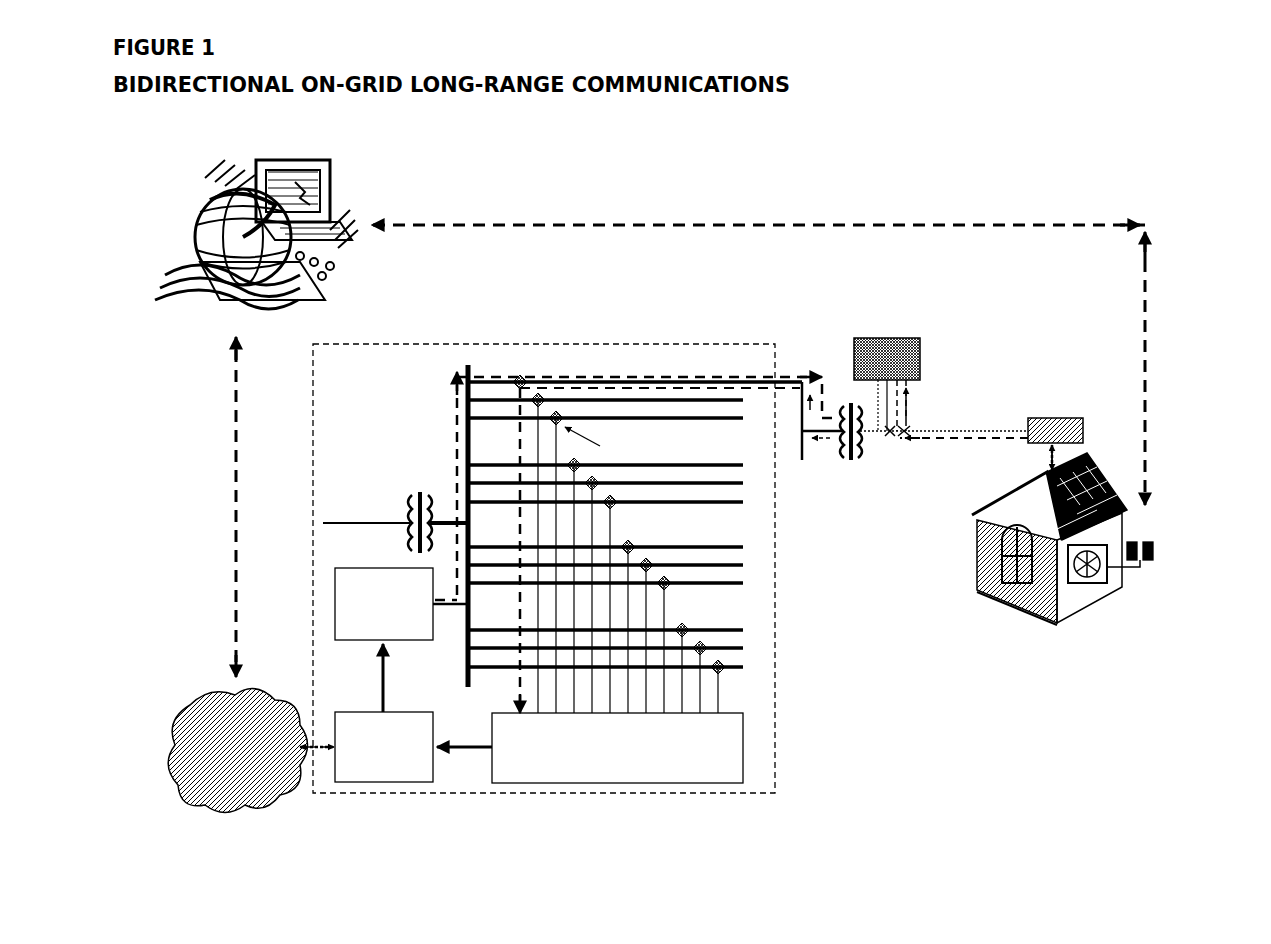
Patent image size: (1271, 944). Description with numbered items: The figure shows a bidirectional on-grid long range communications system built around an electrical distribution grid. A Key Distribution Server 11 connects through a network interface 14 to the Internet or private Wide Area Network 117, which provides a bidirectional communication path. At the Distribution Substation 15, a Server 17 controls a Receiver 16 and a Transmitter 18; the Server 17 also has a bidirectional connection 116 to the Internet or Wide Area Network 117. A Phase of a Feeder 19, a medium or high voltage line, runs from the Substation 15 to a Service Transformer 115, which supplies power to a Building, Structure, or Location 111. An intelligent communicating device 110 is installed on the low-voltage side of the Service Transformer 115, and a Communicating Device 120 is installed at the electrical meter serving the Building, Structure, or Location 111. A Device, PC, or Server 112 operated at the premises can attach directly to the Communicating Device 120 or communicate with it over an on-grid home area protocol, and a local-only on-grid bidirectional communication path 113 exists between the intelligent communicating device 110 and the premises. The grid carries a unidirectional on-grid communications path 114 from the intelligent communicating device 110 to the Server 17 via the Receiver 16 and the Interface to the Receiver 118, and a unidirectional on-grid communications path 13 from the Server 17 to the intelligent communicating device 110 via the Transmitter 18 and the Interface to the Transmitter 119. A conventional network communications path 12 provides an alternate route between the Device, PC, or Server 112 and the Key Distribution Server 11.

The Key Distribution Server (KDS) 11 is at (168, 222).
The conventional network communications path 12 is at (422, 222).
The unidirectional on-grid communications path 13 is at (455, 441).
The network interface 14 is at (231, 402).
The Distribution Substation 15 is at (775, 572).
The Receiver 16 is at (746, 750).
The Server 17 is at (335, 782).
The Transmitter 18 is at (335, 600).
The Phase of a Feeder 19 is at (640, 380).
The intelligent communicating device (ICD) 110 is at (850, 350).
The Building, Structure, or Location 111 is at (1052, 622).
The Device, PC, or Server 112 is at (1112, 590).
The local-only on-grid bidirectional communication path 113 is at (944, 430).
The unidirectional on-grid communications path 114 is at (890, 440).
The Service Transformer 115 is at (838, 459).
The bidirectional connection 116 is at (312, 742).
The Internet or private Wide Area Network 117 is at (180, 720).
The Interface to the Receiver 118 is at (470, 752).
The Interface to the Transmitter 119 is at (380, 676).
The Communicating Device (CD) 120 is at (1058, 414).